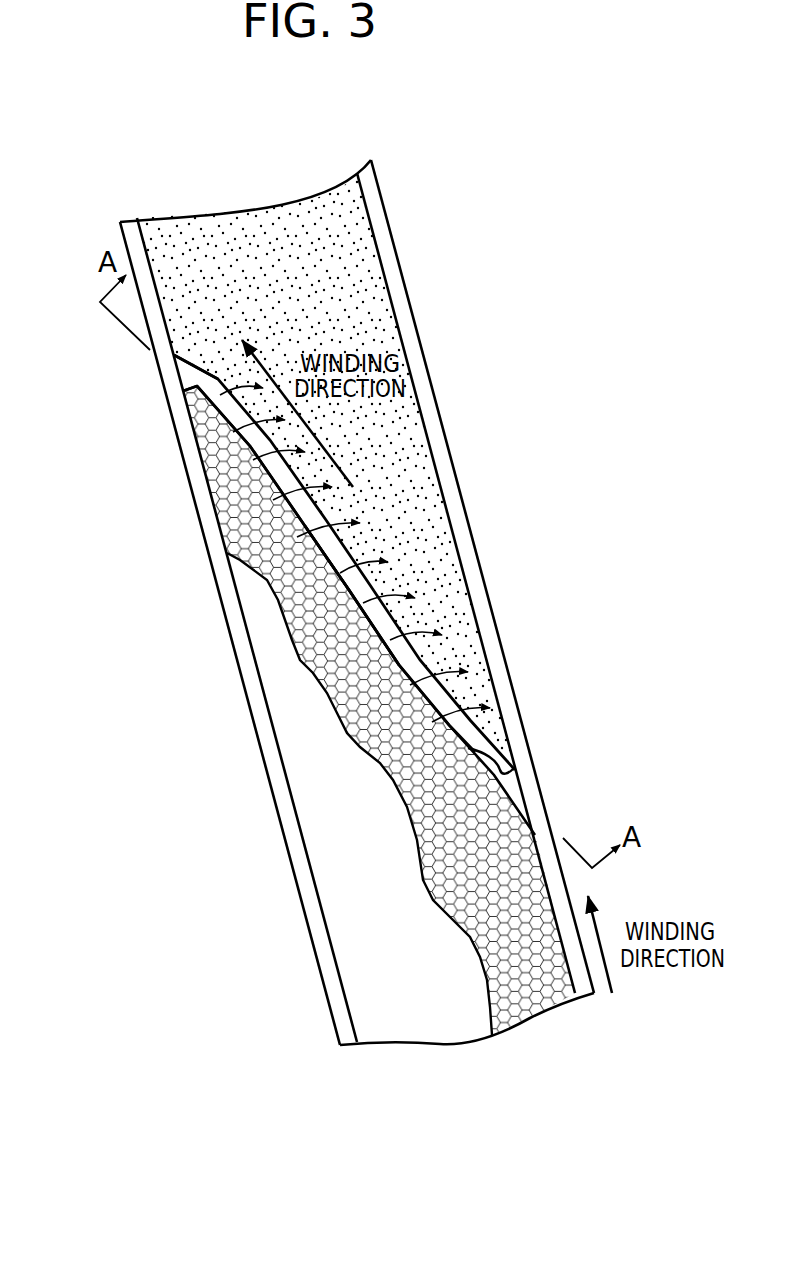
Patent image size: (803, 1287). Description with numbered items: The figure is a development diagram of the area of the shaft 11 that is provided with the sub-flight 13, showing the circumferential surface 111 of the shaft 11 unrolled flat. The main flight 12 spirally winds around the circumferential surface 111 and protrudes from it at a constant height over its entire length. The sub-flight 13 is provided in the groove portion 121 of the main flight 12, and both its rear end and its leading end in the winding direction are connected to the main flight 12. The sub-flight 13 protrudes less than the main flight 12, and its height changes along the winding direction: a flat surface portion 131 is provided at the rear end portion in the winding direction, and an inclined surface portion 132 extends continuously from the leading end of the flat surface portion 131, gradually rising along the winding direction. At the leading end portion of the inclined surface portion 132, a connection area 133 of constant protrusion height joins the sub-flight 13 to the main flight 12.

The shaft 11 is at (395, 1099).
The circumferential surface 111 is at (420, 1010).
The main flight 12 is at (375, 220).
The groove portion 121 is at (367, 900).
The sub-flight 13 is at (323, 511).
The flat surface portion 131 is at (492, 760).
The inclined surface portion 132 is at (363, 583).
The connection area 133 is at (190, 376).